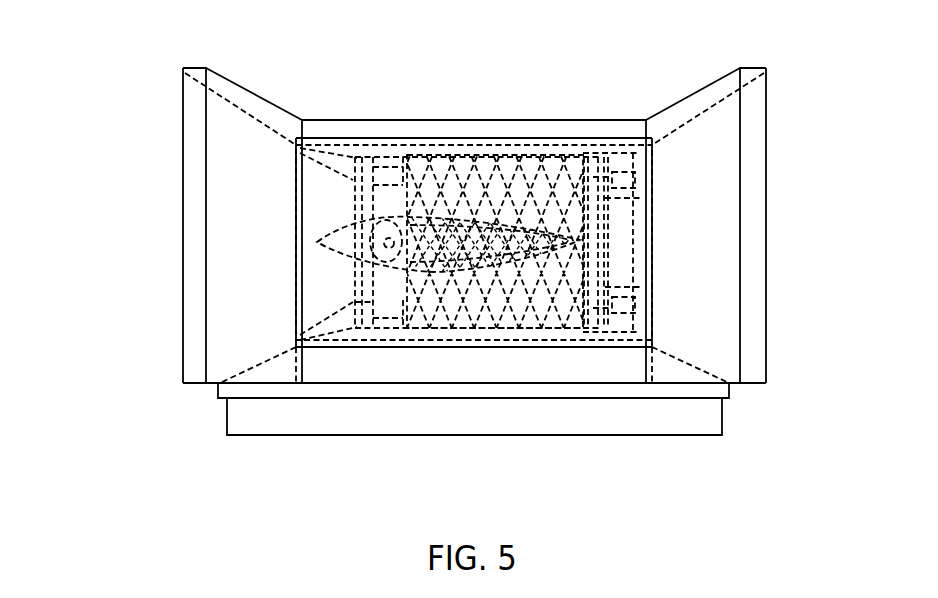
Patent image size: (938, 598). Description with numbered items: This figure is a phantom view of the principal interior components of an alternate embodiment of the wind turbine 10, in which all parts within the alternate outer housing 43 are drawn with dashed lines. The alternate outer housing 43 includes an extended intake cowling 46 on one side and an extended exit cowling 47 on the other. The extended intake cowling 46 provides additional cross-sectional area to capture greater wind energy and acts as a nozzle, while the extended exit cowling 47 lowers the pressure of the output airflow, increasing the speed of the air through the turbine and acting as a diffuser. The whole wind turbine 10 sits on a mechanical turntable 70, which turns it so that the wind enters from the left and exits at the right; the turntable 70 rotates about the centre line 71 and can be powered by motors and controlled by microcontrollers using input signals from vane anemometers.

The wind turbine 10 is at (147, 72).
The alternate outer housing 43 is at (403, 120).
The extended intake cowling 46 is at (258, 92).
The extended exit cowling 47 is at (698, 90).
The mechanical turntable 70 is at (723, 418).
The centre line 71 is at (474, 355).